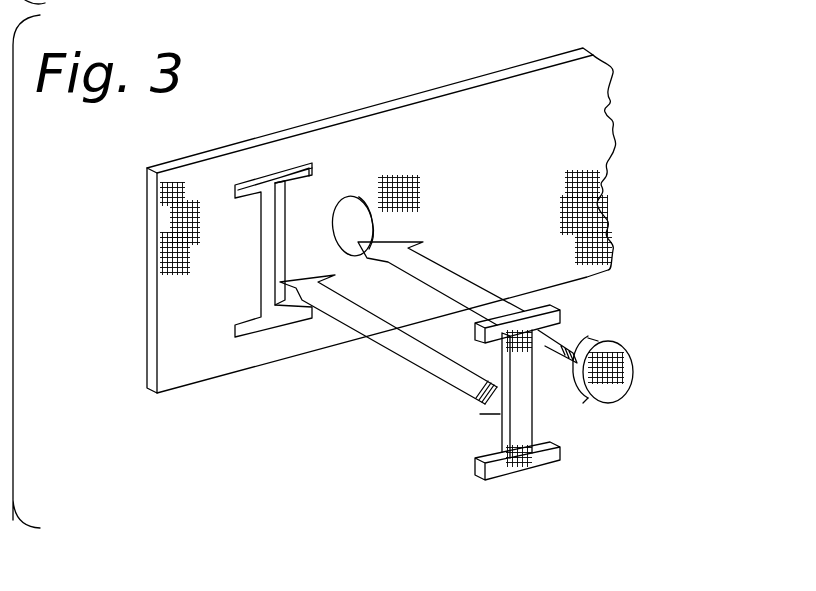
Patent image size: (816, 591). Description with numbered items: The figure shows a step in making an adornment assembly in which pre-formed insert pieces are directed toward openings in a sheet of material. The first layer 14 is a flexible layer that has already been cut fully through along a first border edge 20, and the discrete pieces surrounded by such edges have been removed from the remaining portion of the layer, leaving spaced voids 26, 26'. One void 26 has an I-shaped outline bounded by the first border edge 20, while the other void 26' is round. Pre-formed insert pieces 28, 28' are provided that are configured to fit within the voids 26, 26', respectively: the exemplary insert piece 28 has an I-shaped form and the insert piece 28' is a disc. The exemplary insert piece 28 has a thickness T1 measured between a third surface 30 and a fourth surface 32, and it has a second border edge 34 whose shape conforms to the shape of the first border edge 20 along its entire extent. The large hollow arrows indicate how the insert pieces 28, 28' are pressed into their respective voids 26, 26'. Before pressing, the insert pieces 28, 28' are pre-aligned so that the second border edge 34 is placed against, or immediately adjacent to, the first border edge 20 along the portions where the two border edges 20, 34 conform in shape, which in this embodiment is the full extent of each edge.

The first layer 14 is at (574, 148).
The first border edge 20 is at (281, 207).
The void 26 is at (339, 330).
The void 26' is at (465, 300).
The pre-formed insert piece 28 is at (547, 476).
The pre-formed insert piece 28' is at (637, 369).
The third surface 30 is at (523, 398).
The fourth surface 32 is at (525, 310).
The second border edge 34 is at (500, 415).
The thickness T1 is at (532, 484).